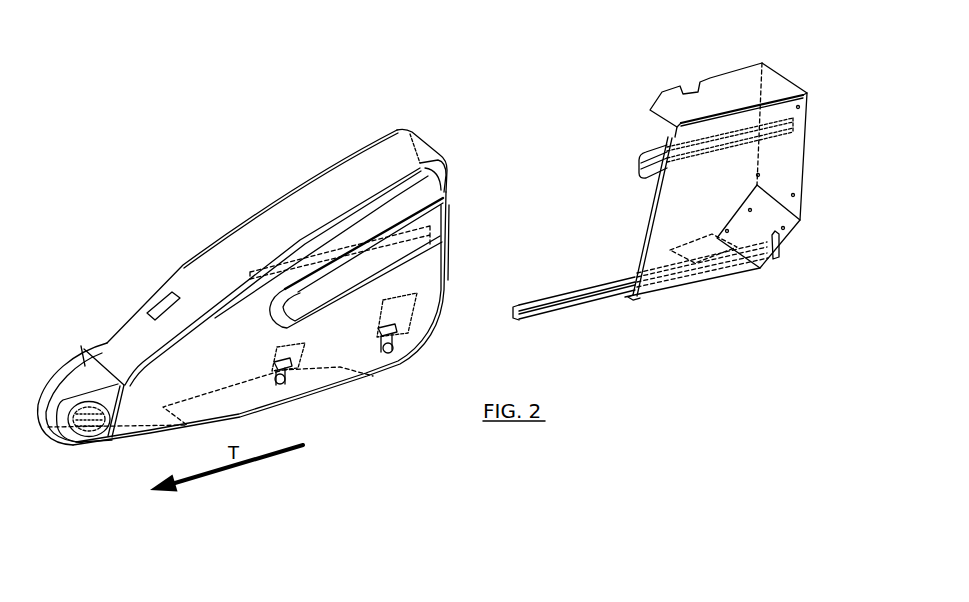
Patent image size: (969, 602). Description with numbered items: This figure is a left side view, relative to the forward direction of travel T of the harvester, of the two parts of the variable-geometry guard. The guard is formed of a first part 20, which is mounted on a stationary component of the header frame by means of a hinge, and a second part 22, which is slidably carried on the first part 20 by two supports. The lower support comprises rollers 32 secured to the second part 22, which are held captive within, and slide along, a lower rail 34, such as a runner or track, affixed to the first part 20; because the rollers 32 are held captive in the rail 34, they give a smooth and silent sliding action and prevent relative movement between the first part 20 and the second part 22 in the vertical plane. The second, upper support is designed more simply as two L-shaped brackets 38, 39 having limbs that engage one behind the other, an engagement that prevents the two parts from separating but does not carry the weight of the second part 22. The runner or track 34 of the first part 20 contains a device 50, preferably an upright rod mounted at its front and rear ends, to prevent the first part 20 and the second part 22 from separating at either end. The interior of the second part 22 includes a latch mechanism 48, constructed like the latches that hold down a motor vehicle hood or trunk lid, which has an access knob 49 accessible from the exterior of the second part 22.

The first part 20 is at (801, 56).
The second part 22 is at (210, 202).
The rollers 32 is at (287, 377).
The lower rail 34 is at (519, 321).
The L-shaped bracket 38 is at (421, 236).
The L-shaped bracket 39 is at (623, 164).
The latch mechanism 48 is at (92, 447).
The access knob 49 is at (93, 445).
The device 50 is at (803, 235).